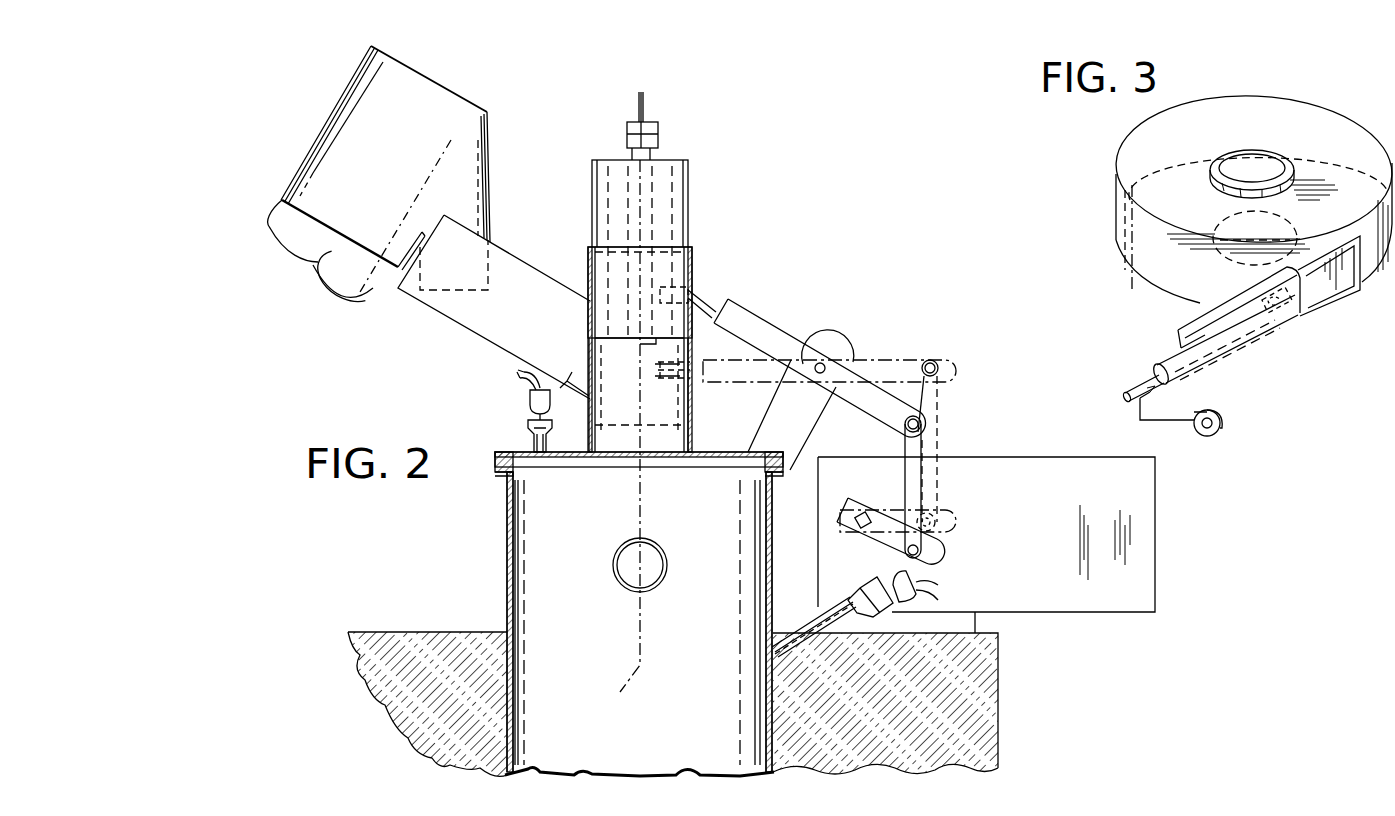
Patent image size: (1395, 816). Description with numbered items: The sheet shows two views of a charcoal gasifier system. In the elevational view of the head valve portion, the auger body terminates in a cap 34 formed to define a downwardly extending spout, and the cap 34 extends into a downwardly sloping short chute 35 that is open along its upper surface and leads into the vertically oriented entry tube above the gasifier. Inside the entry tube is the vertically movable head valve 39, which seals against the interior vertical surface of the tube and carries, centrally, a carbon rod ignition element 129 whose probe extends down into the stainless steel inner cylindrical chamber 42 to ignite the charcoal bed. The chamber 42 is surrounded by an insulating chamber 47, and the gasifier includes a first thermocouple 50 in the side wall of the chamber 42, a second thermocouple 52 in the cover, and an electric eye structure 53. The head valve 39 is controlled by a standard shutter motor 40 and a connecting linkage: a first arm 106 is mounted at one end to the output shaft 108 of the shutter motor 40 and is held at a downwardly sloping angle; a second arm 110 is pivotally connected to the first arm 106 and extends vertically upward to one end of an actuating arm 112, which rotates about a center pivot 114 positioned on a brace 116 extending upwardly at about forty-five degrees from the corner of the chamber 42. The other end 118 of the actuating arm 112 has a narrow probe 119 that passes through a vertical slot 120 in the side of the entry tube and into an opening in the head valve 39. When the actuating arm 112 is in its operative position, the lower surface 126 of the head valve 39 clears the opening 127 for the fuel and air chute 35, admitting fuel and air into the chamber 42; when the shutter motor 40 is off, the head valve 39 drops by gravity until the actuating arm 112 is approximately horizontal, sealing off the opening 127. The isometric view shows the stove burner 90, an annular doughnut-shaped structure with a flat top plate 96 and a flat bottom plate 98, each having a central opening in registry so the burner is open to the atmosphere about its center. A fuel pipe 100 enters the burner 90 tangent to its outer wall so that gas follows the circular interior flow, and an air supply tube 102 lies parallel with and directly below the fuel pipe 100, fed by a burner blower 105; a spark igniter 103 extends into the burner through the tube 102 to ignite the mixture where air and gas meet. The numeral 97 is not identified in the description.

In FIG. 2, the cap 34 is at (457, 101).
In FIG. 2, the chute 35 is at (532, 268).
In FIG. 2, the head valve 39 is at (683, 200).
In FIG. 2, the carbon rod ignition element 129 is at (606, 142).
In FIG. 2, the lower surface of the head valve 126 is at (608, 345).
In FIG. 2, the opening 127 is at (637, 387).
In FIG. 2, the vertical slot 120 is at (690, 327).
In FIG. 2, the probe 119 is at (697, 296).
In FIG. 2, the other end of actuating arm 118 is at (716, 307).
In FIG. 2, the actuating arm 112 is at (873, 386).
In FIG. 2, the center pivot 114 is at (833, 337).
In FIG. 2, the brace 116 is at (818, 410).
In FIG. 2, the second arm 110 is at (920, 499).
In FIG. 2, the first arm 106 is at (948, 565).
In FIG. 2, the output shaft 108 is at (866, 514).
In FIG. 2, the shutter motor 40 is at (1157, 541).
In FIG. 2, the first thermocouple 50 is at (822, 612).
In FIG. 2, the inner cylindrical chamber 42 is at (506, 517).
In FIG. 2, the electric eye structure 53 is at (670, 562).
In FIG. 2, the second thermocouple 52 is at (531, 424).
In FIG. 2, the insulating chamber 47 is at (1000, 680).
In FIG. 3, the top plate 96 is at (1352, 133).
In FIG. 3, the burner 90 is at (1099, 165).
In FIG. 3, the drum axis 97 is at (1133, 255).
In FIG. 3, the bottom plate 98 is at (1172, 282).
In FIG. 3, the fuel pipe 100 is at (1248, 320).
In FIG. 3, the air supply tube 102 is at (1212, 358).
In FIG. 3, the spark igniter 103 is at (1290, 320).
In FIG. 3, the burner blower 105 is at (1222, 425).